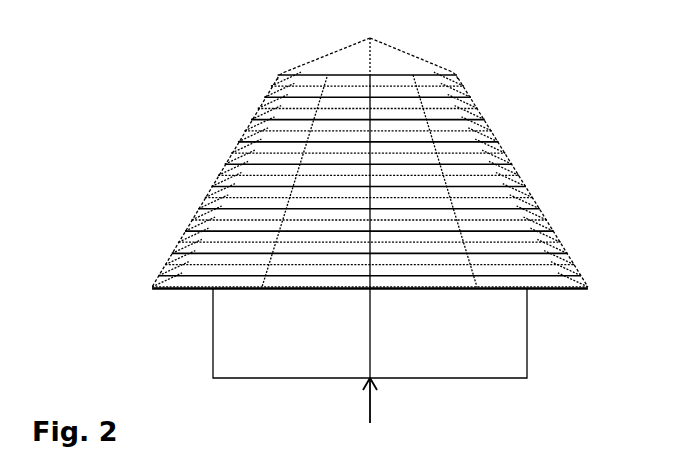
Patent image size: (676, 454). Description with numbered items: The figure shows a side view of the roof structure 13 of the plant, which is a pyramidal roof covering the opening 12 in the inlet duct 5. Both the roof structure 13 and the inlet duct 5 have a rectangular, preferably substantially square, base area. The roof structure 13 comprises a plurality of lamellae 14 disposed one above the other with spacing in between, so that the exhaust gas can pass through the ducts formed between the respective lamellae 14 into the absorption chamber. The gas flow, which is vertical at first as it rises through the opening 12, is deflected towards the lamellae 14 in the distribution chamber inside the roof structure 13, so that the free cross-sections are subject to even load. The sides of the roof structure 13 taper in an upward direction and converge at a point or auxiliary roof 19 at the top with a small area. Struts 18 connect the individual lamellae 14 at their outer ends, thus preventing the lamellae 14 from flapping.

The inlet duct 5 is at (527, 345).
The opening 12 is at (371, 413).
The roof structure 13 is at (140, 171).
The lamellae 14 is at (540, 230).
The struts 18 is at (305, 148).
The auxiliary roof 19 is at (390, 63).